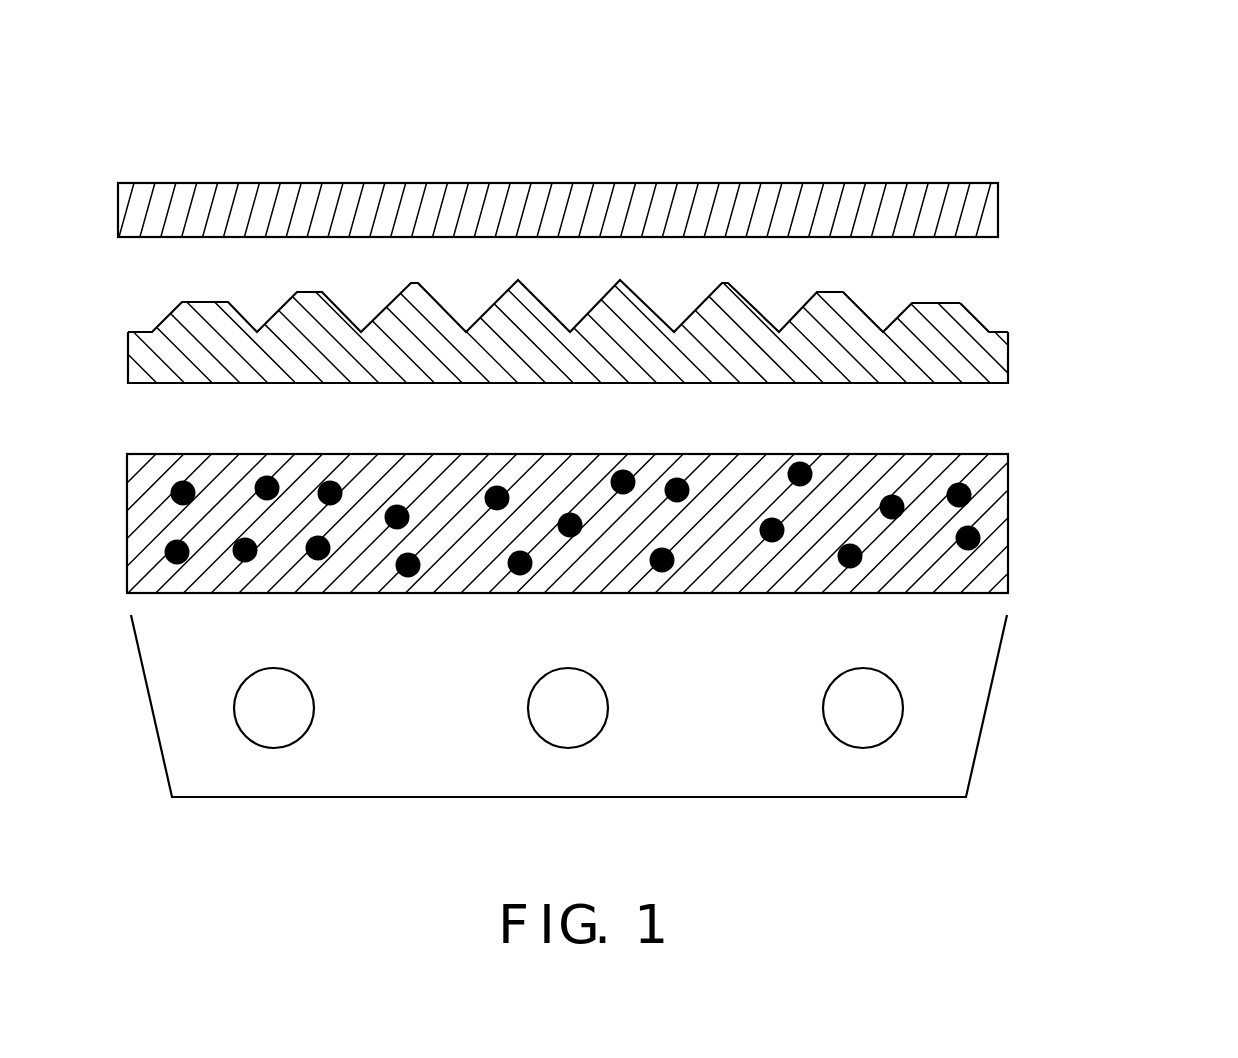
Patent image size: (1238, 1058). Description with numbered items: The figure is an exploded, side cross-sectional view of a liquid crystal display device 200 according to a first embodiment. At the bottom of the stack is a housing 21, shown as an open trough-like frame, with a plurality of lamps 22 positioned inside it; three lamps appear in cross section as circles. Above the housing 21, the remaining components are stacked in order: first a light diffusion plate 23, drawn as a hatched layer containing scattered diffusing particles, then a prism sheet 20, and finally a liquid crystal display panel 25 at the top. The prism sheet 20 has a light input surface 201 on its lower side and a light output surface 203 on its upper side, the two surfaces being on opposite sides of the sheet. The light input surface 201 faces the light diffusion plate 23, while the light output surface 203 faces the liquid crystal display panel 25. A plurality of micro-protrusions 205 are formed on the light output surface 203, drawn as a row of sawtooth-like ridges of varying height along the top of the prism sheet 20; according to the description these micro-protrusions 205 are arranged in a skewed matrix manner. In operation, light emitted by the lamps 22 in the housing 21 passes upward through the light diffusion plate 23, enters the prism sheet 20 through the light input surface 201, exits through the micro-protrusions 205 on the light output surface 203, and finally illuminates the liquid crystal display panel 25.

The liquid crystal display device 200 is at (630, 73).
The liquid crystal display panel 25 is at (987, 223).
The prism sheet 20 is at (607, 345).
The light output surface 203 is at (990, 330).
The micro-protrusions 205 is at (935, 312).
The light input surface 201 is at (982, 385).
The light diffusion plate 23 is at (1008, 522).
The lamps 22 is at (872, 700).
The housing 21 is at (988, 712).